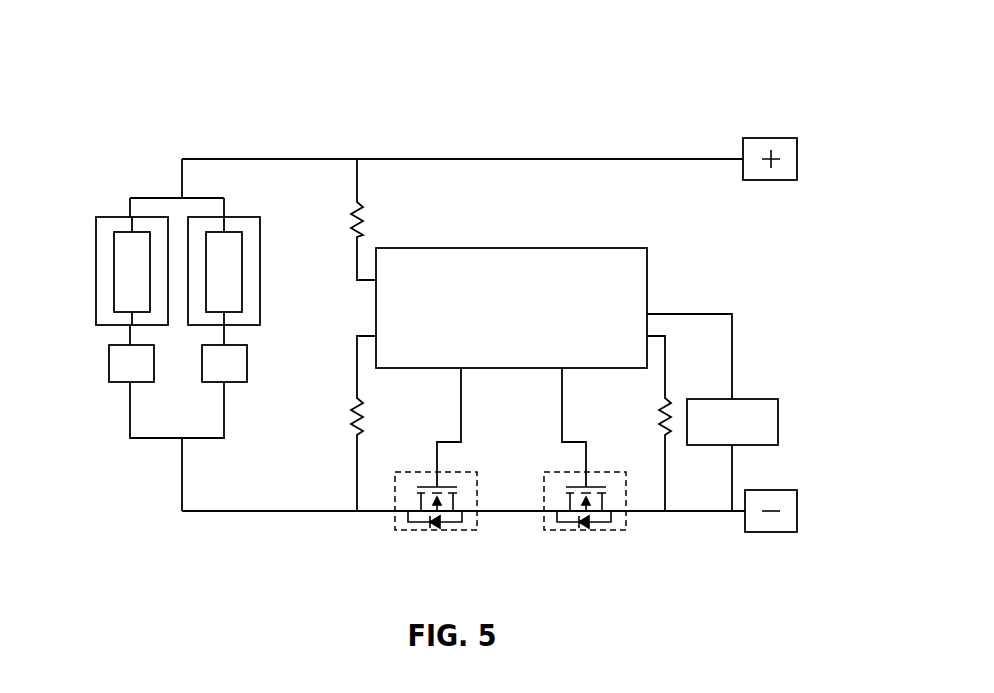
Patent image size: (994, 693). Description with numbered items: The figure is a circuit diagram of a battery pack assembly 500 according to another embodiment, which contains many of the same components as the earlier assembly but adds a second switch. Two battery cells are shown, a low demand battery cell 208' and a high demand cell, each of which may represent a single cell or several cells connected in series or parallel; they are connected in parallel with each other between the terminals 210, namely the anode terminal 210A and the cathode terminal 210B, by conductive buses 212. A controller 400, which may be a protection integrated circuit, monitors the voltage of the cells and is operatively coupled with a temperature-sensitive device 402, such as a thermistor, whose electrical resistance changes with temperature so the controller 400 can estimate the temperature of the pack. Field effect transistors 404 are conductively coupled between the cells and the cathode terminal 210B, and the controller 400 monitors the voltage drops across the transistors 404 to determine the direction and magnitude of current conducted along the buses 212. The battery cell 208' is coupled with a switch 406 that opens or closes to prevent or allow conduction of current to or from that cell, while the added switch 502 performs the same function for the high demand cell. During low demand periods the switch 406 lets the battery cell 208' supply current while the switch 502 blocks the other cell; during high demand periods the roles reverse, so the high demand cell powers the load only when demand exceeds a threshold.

The battery pack assembly 500 is at (825, 63).
The conductive buses 212 is at (567, 158).
The low demand battery cell 208' is at (95, 268).
The switch 406 is at (118, 383).
The switch 502 is at (247, 363).
The controller 400 is at (618, 248).
The field effect transistors 404 is at (415, 532).
The temperature-sensitive device 402 is at (755, 399).
The terminals 210 is at (798, 138).
The anode terminal 210A is at (778, 180).
The cathode terminal 210B is at (770, 532).